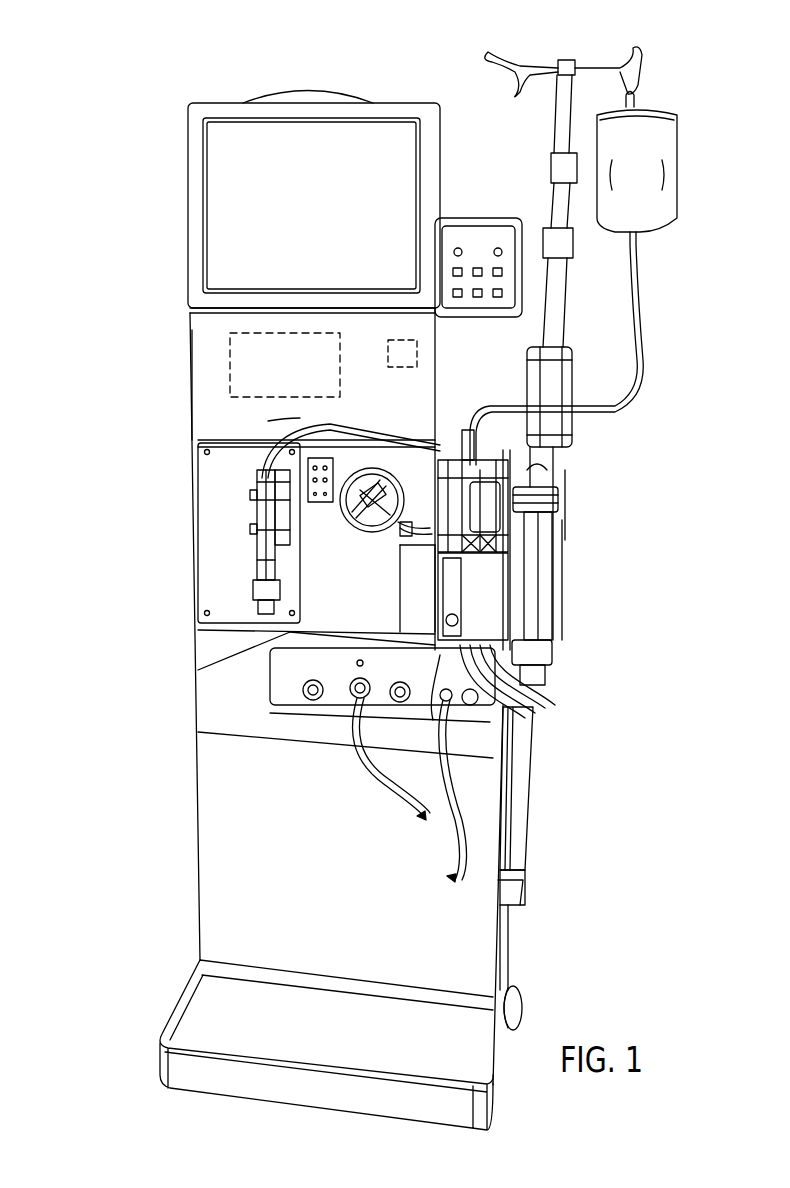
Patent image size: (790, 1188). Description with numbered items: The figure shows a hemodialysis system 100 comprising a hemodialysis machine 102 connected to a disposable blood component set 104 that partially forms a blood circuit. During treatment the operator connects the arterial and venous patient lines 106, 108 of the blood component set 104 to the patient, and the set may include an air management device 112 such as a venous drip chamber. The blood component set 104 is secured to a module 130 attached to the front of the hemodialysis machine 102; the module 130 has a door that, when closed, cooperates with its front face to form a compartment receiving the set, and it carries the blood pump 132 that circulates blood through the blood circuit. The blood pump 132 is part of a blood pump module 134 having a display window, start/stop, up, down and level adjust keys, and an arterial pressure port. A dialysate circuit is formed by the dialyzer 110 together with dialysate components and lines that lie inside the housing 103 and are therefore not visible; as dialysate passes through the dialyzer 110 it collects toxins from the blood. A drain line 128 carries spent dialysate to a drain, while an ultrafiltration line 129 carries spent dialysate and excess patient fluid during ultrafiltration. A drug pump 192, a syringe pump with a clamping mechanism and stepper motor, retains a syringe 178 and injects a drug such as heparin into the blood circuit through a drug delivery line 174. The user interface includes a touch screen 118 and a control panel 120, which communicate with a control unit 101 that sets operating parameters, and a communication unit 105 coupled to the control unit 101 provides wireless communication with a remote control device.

The hemodialysis system 100 is at (122, 146).
The control unit 101 is at (400, 367).
The hemodialysis machine 102 is at (188, 509).
The housing 103 is at (190, 424).
The disposable blood component set 104 is at (583, 545).
The communication unit 105 is at (285, 365).
The arterial patient line 106 is at (493, 730).
The venous patient line 108 is at (545, 710).
The dialyzer 110 is at (535, 626).
The air management device 112 is at (520, 548).
The touch screen 118 is at (408, 128).
The control panel 120 is at (472, 236).
The drain line 128 is at (385, 790).
The ultrafiltration line 129 is at (445, 860).
The module 130 is at (560, 442).
The blood pump 132 is at (355, 527).
The blood pump module 134 is at (325, 612).
The drug delivery line 174 is at (334, 444).
The syringe 178 is at (255, 545).
The drug pump 192 is at (236, 523).